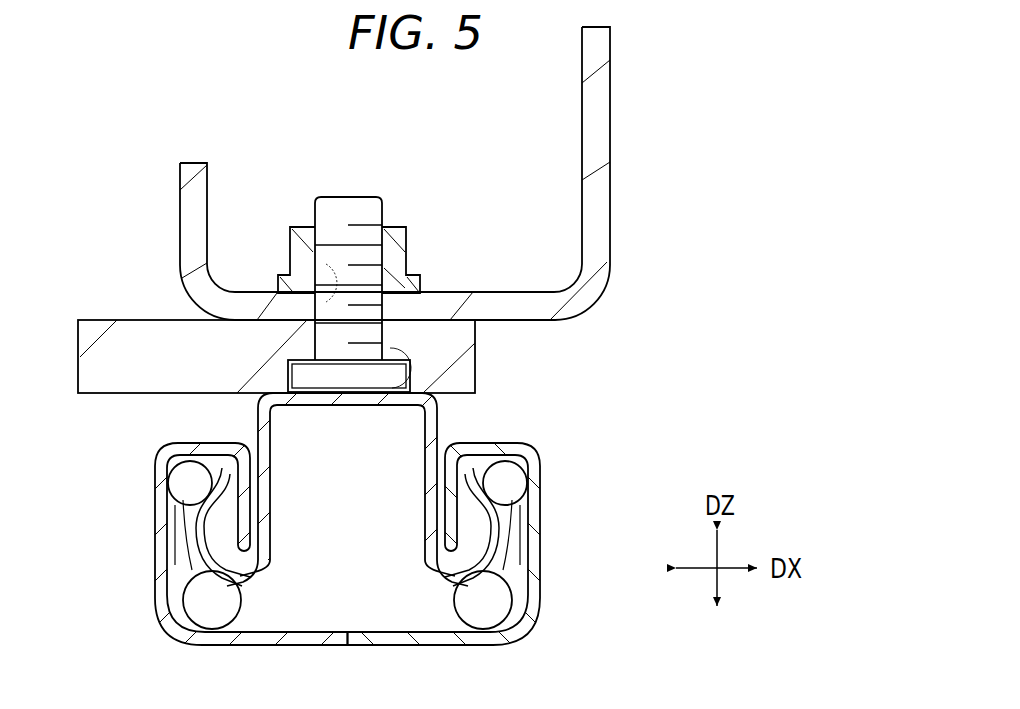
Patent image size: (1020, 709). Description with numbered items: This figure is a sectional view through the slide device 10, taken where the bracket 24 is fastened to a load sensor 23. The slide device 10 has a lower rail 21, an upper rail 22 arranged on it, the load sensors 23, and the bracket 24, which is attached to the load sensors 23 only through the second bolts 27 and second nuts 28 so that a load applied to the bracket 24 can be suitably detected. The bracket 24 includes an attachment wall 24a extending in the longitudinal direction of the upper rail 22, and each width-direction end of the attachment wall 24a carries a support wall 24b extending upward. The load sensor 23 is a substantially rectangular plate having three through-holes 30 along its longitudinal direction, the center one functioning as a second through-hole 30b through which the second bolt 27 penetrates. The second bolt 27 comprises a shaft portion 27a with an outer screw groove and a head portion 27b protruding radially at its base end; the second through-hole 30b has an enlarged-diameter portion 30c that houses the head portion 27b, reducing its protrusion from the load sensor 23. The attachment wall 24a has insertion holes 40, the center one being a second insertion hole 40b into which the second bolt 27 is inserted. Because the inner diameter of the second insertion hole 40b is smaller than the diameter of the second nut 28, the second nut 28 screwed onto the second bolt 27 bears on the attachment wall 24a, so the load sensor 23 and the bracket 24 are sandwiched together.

The slide device 10 is at (612, 359).
The lower rail 21 is at (160, 552).
The upper rail 22 is at (440, 424).
The load sensor 23 is at (97, 320).
The bracket 24 is at (421, 173).
The attachment wall 24a is at (528, 290).
The support wall 24b is at (180, 200).
The second bolt 27 is at (349, 289).
The shaft portion 27a is at (360, 196).
The head portion 27b is at (352, 394).
The second nut 28 is at (407, 236).
The through-hole 30 is at (451, 277).
The second through-hole 30b is at (445, 229).
The enlarged-diameter portion 30c is at (395, 352).
The insertion hole 40 is at (277, 232).
The second insertion hole 40b is at (290, 243).